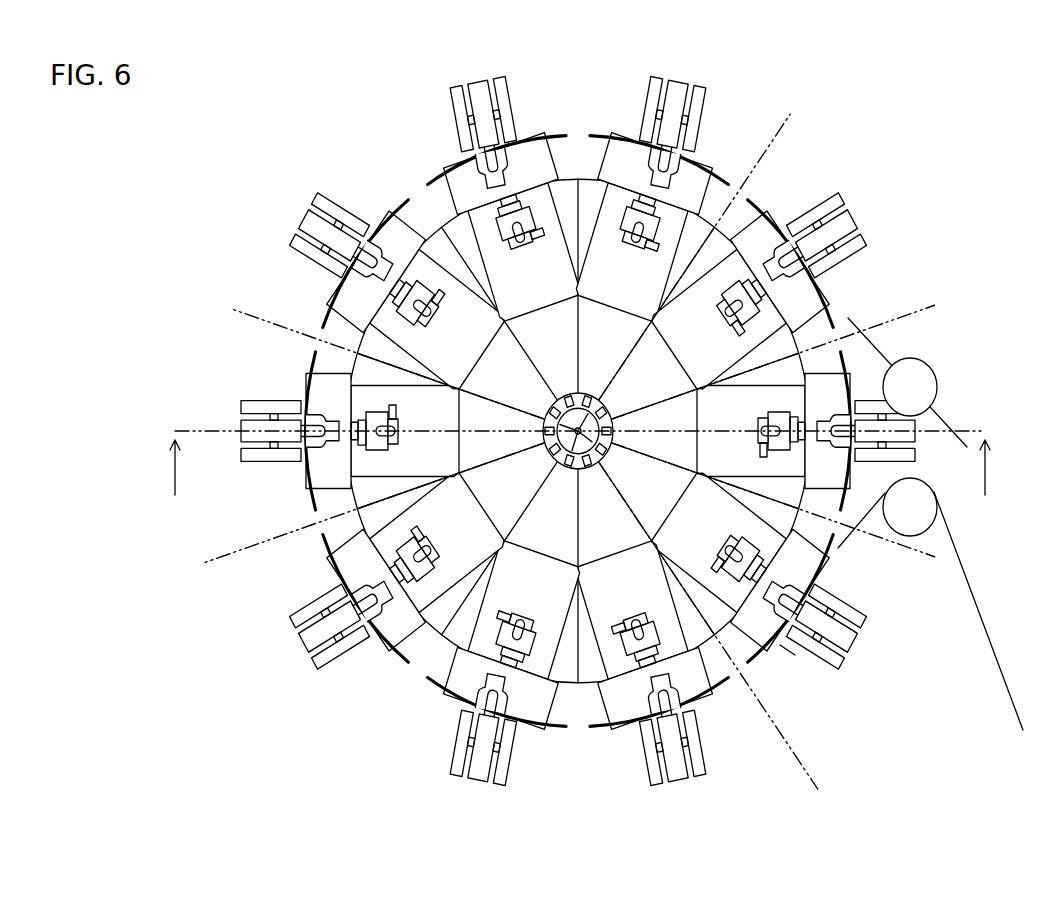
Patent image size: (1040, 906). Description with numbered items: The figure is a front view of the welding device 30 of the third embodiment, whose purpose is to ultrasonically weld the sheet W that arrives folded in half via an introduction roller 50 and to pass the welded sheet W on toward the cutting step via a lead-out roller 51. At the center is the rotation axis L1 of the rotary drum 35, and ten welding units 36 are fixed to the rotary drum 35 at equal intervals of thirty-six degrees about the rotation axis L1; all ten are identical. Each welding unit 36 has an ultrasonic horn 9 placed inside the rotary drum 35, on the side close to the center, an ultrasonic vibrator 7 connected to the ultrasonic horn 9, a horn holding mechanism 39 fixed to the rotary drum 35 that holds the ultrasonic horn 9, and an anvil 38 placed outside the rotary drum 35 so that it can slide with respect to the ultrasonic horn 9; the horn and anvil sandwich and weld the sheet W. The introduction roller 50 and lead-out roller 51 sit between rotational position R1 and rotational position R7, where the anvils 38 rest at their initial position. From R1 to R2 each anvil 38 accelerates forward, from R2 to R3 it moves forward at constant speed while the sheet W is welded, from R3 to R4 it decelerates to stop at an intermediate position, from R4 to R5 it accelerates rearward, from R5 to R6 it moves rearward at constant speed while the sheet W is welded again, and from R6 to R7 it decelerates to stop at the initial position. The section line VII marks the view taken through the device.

The ultrasonic vibrator 7 is at (637, 245).
The ultrasonic horn 9 is at (660, 178).
The welding device 30 is at (928, 87).
The rotary drum 35 is at (580, 187).
The welding unit 36 is at (431, 74).
The anvil 38 is at (673, 100).
The horn holding mechanism 39 is at (796, 660).
The introduction roller 50 is at (925, 367).
The lead-out roller 51 is at (937, 526).
The rotation axis L1 is at (580, 413).
The rotational position R1 is at (789, 353).
The rotational position R2 is at (710, 237).
The rotational position R3 is at (368, 356).
The rotational position R4 is at (561, 435).
The rotational position R5 is at (354, 513).
The rotational position R6 is at (720, 637).
The rotational position R7 is at (781, 511).
The sheet W is at (955, 430).
The section line VII is at (579, 483).